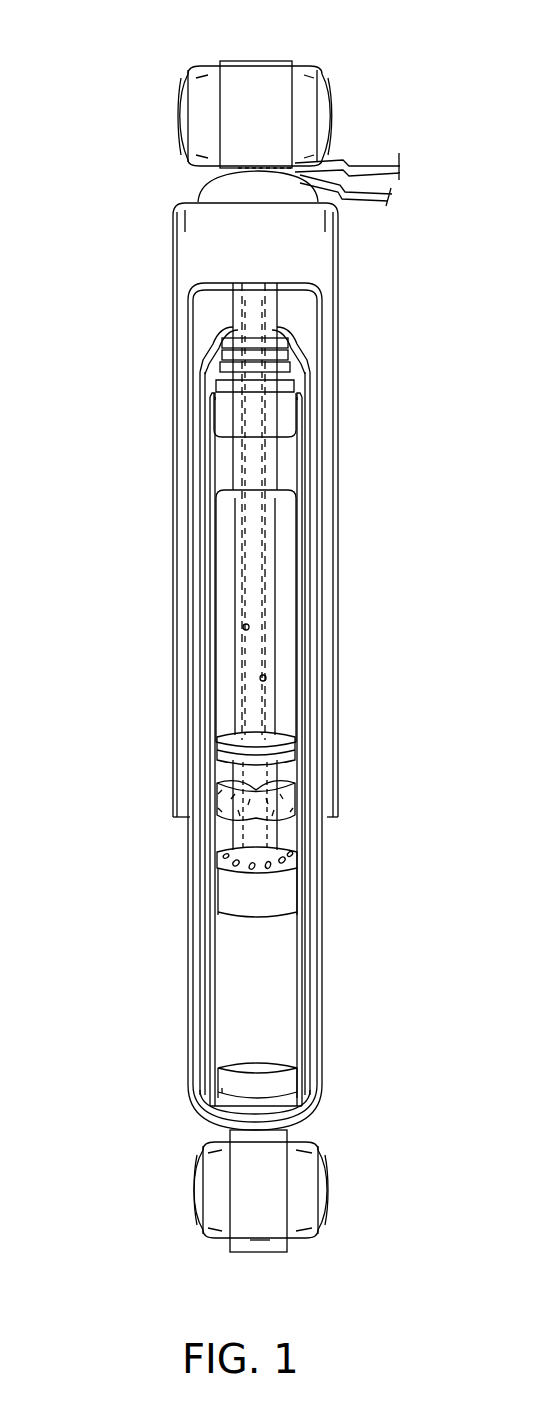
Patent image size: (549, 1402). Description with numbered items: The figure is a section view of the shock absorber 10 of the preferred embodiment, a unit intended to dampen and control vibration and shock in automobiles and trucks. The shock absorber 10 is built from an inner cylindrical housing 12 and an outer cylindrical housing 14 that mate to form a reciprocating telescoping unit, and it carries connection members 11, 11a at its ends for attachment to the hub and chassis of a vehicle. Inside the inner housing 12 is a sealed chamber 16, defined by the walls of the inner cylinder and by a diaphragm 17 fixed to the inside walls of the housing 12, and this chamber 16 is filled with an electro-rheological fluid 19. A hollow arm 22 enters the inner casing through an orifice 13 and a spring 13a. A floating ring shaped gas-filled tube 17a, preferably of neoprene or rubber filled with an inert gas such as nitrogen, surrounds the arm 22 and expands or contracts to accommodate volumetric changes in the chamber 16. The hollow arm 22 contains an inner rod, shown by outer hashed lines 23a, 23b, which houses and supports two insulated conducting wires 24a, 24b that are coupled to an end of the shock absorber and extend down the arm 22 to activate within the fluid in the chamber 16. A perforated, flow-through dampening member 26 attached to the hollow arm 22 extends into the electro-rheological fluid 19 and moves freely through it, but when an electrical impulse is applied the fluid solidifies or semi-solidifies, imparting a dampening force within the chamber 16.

The shock absorber 10 is at (97, 703).
The connection member 11 is at (256, 86).
The connection member 11a is at (247, 1221).
The inner cylindrical housing 12 is at (326, 929).
The orifice 13 is at (232, 326).
The spring 13a is at (280, 325).
The outer cylindrical housing 14 is at (340, 458).
The sealed chamber 16 is at (277, 993).
The diaphragm 17 is at (290, 734).
The floating ring shaped gas-filled tube 17a is at (285, 797).
The electro-rheological fluid 19 is at (272, 1026).
The hollow arm 22 is at (268, 576).
The outer hashed line 23a is at (243, 582).
The outer hashed line 23b is at (268, 641).
The insulated conducting wire 24a is at (386, 196).
The connecting wire 24b is at (381, 166).
The perforated dampening member 26 is at (232, 884).